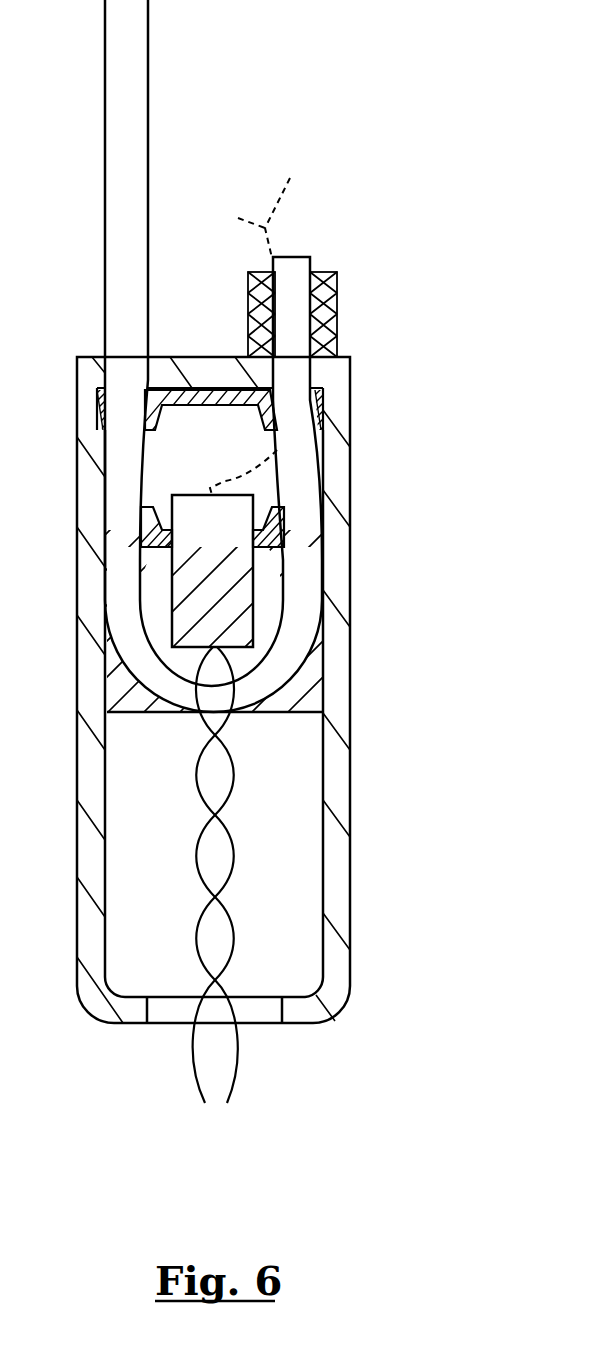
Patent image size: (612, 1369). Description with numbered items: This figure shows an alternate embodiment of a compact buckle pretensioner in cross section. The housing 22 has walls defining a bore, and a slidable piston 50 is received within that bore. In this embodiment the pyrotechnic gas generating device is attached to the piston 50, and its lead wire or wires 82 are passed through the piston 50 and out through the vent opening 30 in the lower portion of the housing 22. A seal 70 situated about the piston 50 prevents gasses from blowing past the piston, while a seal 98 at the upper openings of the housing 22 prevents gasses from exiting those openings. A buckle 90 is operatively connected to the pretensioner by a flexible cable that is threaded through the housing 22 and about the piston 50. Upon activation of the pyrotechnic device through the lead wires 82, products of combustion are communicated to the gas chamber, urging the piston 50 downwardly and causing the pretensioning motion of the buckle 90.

The housing 22 is at (343, 684).
The vent opening 30 is at (172, 1005).
The piston 50 is at (138, 695).
The seal 70 is at (155, 508).
The lead wires 82 is at (217, 813).
The buckle 90 is at (130, 152).
The seal 98 is at (194, 398).